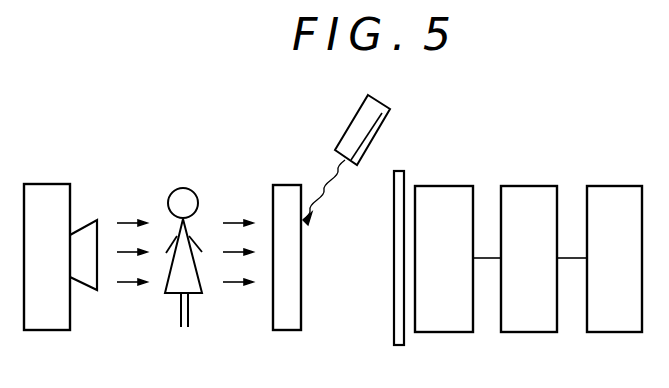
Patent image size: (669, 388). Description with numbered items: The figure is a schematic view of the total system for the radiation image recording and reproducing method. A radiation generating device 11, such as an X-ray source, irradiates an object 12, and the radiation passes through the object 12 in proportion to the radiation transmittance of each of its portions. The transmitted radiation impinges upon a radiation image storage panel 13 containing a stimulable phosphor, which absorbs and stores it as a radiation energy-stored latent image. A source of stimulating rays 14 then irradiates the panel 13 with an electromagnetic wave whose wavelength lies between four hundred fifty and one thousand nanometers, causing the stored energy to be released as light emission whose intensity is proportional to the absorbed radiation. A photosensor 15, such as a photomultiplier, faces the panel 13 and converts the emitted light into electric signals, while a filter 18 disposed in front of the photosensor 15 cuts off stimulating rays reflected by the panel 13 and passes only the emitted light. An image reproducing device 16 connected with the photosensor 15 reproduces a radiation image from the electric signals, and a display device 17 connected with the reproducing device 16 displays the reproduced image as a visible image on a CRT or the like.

The radiation generating device 11 is at (51, 322).
The object 12 is at (180, 315).
The radiation image storage panel 13 is at (290, 322).
The source of stimulating rays 14 is at (378, 115).
The photosensor 15 is at (452, 322).
The image reproducing device 16 is at (536, 322).
The display device 17 is at (620, 322).
The filter 18 is at (394, 318).